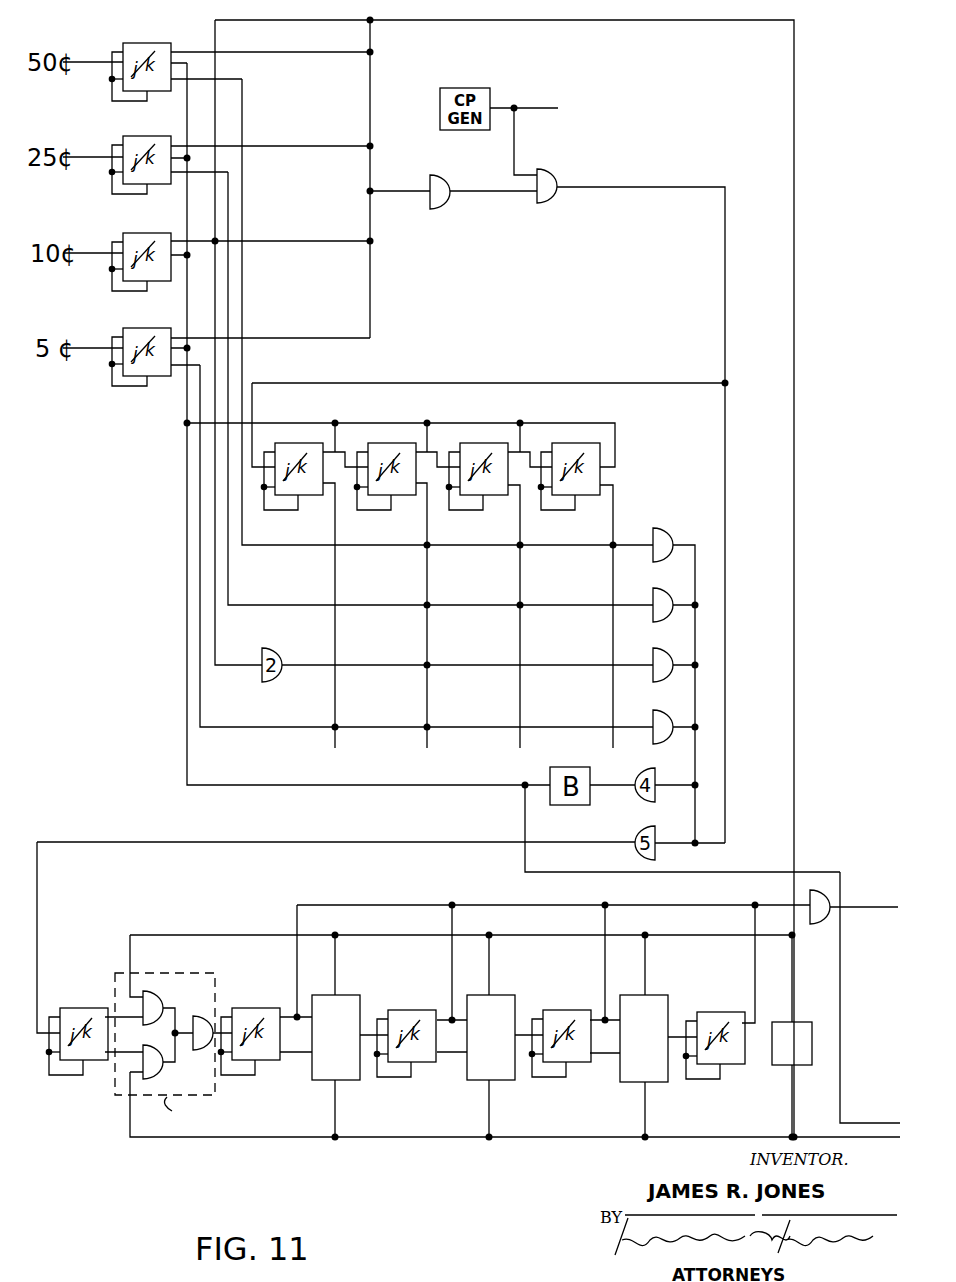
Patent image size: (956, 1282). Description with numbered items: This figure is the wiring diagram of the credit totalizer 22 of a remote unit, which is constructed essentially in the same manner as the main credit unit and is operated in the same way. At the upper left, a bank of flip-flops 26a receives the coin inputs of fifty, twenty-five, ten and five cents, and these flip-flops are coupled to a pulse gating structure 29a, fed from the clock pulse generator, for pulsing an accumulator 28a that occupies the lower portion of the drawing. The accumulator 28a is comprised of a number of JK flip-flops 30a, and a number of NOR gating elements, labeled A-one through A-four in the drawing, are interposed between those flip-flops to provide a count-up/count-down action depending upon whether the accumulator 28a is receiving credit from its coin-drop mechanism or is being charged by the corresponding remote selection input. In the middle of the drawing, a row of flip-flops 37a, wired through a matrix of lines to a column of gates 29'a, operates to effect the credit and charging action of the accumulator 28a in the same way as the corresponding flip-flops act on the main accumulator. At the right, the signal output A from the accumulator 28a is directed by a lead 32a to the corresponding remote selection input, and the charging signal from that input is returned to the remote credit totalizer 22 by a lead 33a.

The credit totalizer 22 is at (157, 593).
The bank of flip-flops 26a is at (155, 91).
The accumulator 28a is at (468, 991).
The pulse gating structure 29a is at (559, 170).
The output AND gates 29'a is at (672, 670).
The JK flip-flops 30a is at (282, 1010).
The lead 32a is at (857, 907).
The lead 33a is at (840, 1003).
The flip-flops 37a is at (383, 443).